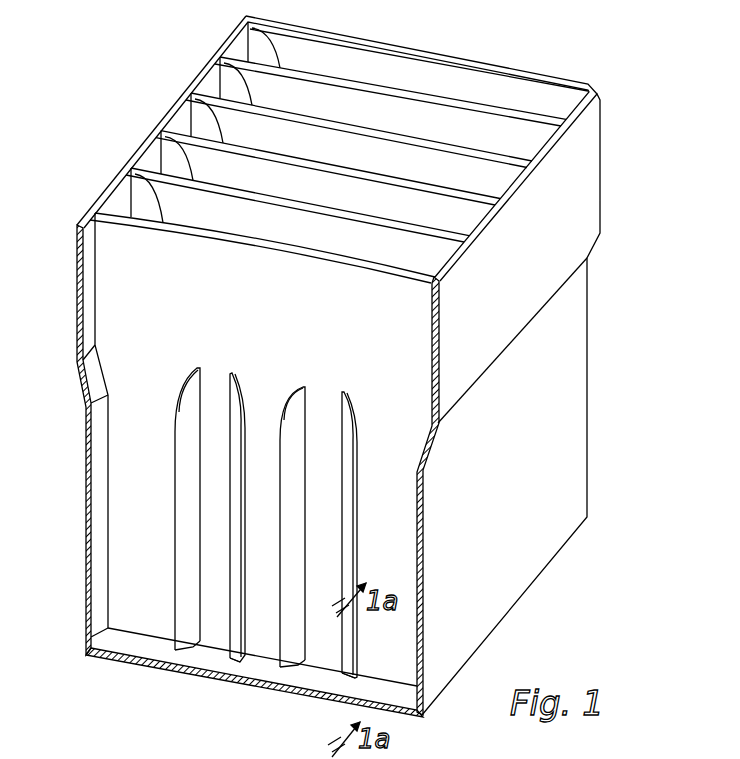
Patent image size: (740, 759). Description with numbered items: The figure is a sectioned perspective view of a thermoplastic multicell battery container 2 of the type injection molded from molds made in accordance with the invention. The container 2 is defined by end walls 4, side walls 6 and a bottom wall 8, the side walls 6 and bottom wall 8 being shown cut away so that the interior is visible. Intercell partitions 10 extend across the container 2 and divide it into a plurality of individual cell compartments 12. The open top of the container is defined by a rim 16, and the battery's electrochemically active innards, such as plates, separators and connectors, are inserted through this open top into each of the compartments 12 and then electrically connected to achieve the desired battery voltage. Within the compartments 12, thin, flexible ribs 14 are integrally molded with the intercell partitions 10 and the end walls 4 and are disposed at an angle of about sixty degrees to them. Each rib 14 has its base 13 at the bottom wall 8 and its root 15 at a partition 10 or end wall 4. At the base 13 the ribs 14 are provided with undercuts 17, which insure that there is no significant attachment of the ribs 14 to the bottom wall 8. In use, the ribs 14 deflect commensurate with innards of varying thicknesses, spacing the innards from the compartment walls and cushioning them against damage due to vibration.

The multicell battery container 2 is at (584, 78).
The end wall 4 is at (462, 62).
The side wall 6 is at (85, 490).
The bottom wall 8 is at (158, 667).
The intercell partition 10 is at (262, 44).
The cell compartment 12 is at (195, 132).
The base 13 is at (347, 676).
The rib 14 is at (232, 552).
The root 15 is at (230, 488).
The rim 16 is at (110, 197).
The undercut 17 is at (285, 658).